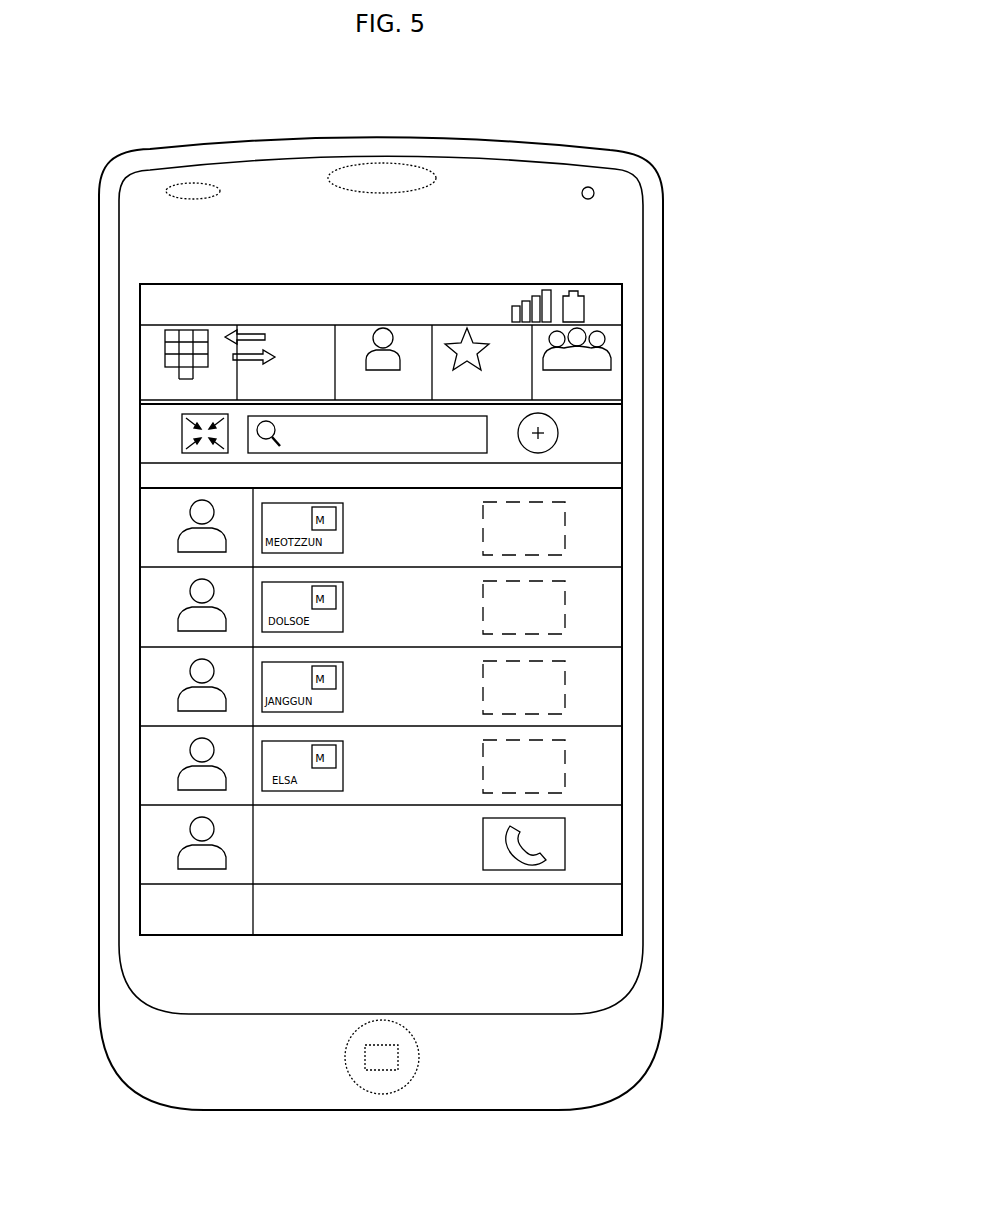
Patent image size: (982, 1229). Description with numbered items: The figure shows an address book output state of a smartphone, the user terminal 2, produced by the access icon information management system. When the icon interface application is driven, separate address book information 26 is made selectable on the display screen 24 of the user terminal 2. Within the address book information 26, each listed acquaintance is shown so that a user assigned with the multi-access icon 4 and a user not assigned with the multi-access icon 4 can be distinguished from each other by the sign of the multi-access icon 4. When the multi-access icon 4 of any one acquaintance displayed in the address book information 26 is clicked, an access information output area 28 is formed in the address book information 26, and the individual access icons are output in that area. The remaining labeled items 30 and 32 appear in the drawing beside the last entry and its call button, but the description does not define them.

The user terminal 2 is at (552, 140).
The display screen 24 is at (612, 249).
The address book information 26 is at (612, 465).
The access information output area 28 is at (565, 603).
The contact name 30 is at (268, 853).
The call button 32 is at (566, 843).
The multi-access icon 4 is at (262, 526).